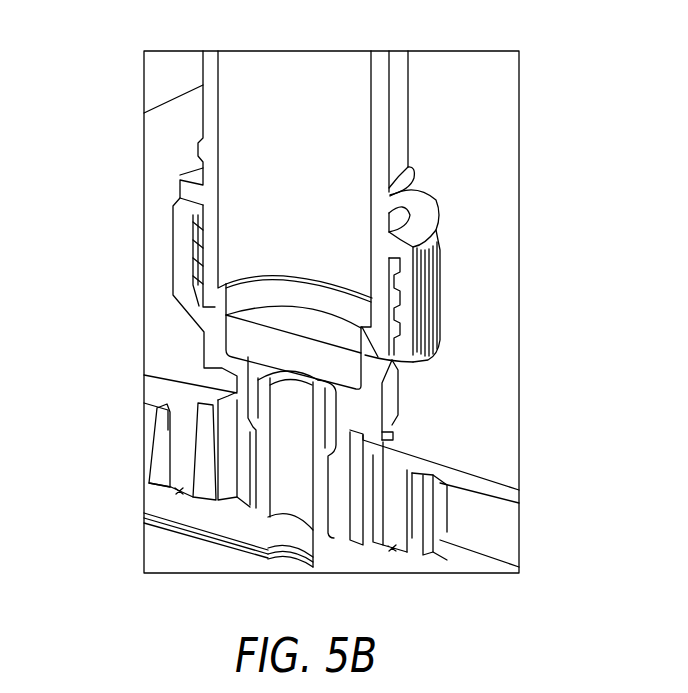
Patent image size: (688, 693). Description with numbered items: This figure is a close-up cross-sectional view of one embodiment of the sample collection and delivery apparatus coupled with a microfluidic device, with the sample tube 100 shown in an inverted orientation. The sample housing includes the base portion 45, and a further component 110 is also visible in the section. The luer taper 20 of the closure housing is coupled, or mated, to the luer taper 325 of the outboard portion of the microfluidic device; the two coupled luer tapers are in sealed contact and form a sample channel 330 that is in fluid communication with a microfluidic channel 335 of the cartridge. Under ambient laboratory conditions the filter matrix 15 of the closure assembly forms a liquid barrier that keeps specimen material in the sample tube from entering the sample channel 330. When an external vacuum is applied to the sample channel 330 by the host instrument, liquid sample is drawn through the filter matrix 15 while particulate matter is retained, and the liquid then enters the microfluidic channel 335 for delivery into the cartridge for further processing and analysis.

The sample tube 100 is at (204, 124).
The inner tube 110 is at (246, 222).
The base portion 45 is at (443, 308).
The filter matrix 15 is at (293, 352).
The luer taper 20 is at (348, 420).
The sample channel 330 is at (280, 452).
The microfluidic channel 335 is at (297, 540).
The luer taper 325 is at (313, 480).